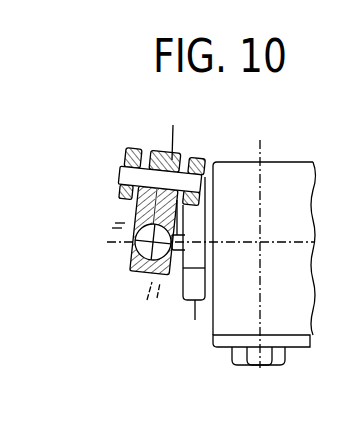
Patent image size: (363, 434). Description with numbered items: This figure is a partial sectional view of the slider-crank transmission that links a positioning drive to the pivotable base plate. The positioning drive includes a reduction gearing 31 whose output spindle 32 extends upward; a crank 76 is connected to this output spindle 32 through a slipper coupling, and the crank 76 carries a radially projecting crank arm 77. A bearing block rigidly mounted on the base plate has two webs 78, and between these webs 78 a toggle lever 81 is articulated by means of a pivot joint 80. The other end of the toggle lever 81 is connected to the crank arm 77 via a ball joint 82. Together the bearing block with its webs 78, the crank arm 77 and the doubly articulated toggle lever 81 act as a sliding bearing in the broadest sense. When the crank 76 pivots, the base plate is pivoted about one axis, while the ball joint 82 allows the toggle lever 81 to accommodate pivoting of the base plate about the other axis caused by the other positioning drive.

The reduction gearing 31 is at (303, 222).
The output spindle 32 is at (209, 233).
The crank 76 is at (194, 325).
The crank arm 77 is at (196, 248).
The webs 78 is at (132, 148).
The pivot joint 80 is at (121, 176).
The toggle lever 81 is at (138, 212).
The ball joint 82 is at (138, 250).